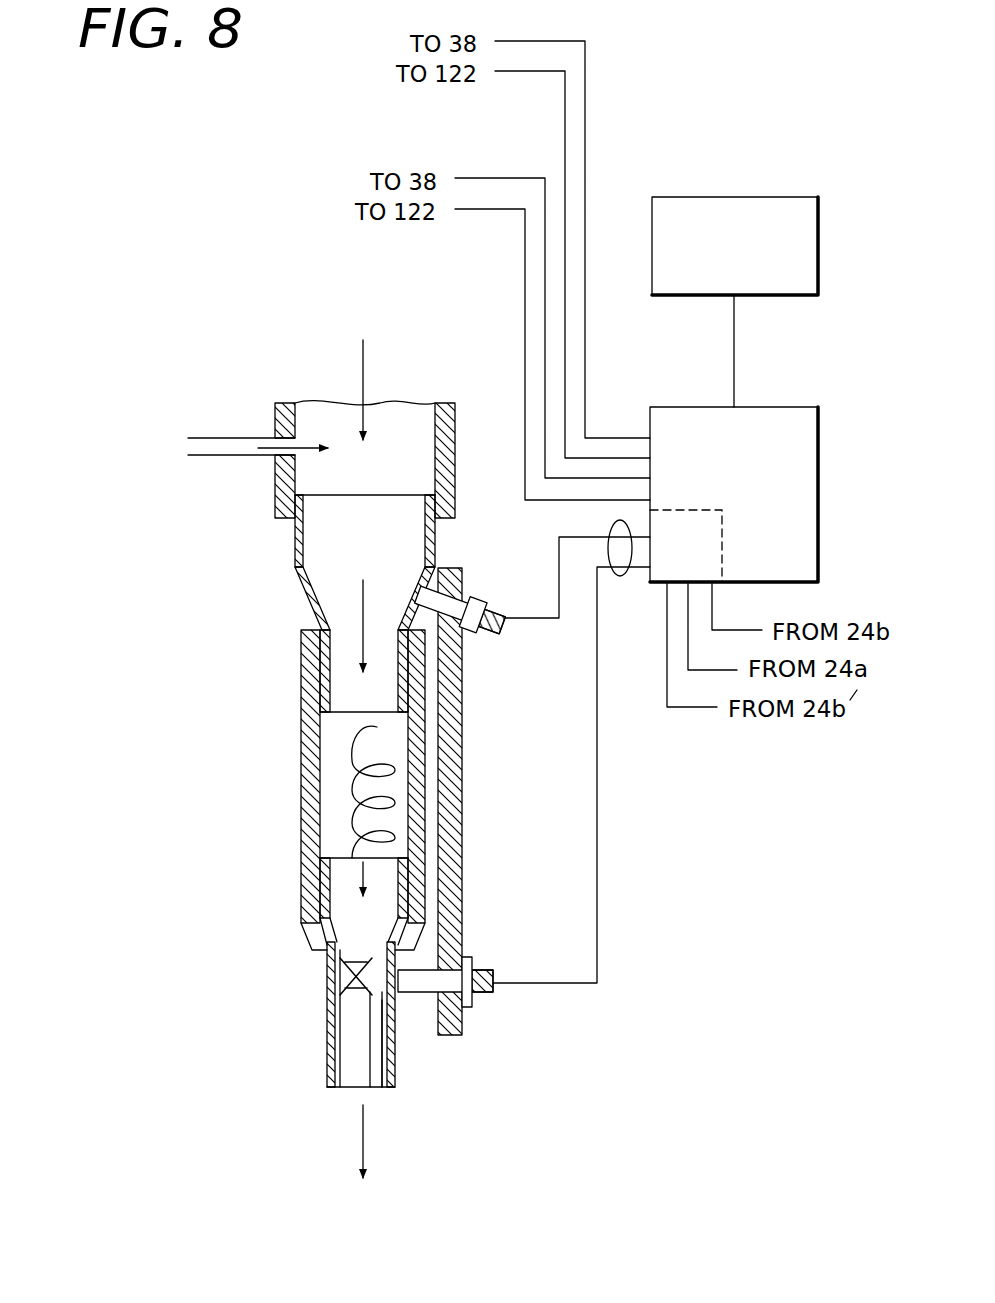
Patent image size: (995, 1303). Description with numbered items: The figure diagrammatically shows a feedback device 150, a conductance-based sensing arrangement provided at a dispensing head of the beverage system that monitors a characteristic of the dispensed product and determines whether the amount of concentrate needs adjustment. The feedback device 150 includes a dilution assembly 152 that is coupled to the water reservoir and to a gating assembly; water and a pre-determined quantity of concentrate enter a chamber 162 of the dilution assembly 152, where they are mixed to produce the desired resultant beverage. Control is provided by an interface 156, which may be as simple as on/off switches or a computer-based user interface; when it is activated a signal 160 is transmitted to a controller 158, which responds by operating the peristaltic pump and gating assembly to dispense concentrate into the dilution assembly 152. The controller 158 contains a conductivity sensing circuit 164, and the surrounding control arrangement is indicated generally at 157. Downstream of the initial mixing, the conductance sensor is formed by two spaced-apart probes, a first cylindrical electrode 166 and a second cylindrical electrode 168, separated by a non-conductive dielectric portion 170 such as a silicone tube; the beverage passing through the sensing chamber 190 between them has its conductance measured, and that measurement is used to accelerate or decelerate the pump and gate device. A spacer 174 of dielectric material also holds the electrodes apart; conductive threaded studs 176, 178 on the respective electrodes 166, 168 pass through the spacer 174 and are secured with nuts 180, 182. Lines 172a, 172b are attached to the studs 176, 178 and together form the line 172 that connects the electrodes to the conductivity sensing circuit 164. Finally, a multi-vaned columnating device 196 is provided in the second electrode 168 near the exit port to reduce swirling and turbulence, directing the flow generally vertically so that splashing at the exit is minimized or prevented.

The feedback device 150 is at (165, 810).
The dilution assembly 152 is at (427, 380).
The interface 156 is at (735, 195).
The control circuit 157 is at (715, 815).
The controller 158 is at (665, 405).
The signal 160 is at (735, 350).
The chamber 162 is at (455, 465).
The conductivity sensing circuit 164 is at (740, 540).
The first cylindrical electrode 166 is at (305, 600).
The second cylindrical electrode 168 is at (330, 1000).
The dielectric portion 170 is at (300, 790).
The line 172 is at (620, 580).
The line 172a is at (557, 560).
The line 172b is at (597, 757).
The spacer 174 is at (465, 760).
The conductive threaded stud 176 is at (500, 605).
The conductive threaded stud 178 is at (493, 975).
The nut 180 is at (478, 590).
The nut 182 is at (467, 960).
The sensing chamber 190 is at (283, 860).
The columnating device 196 is at (375, 1025).